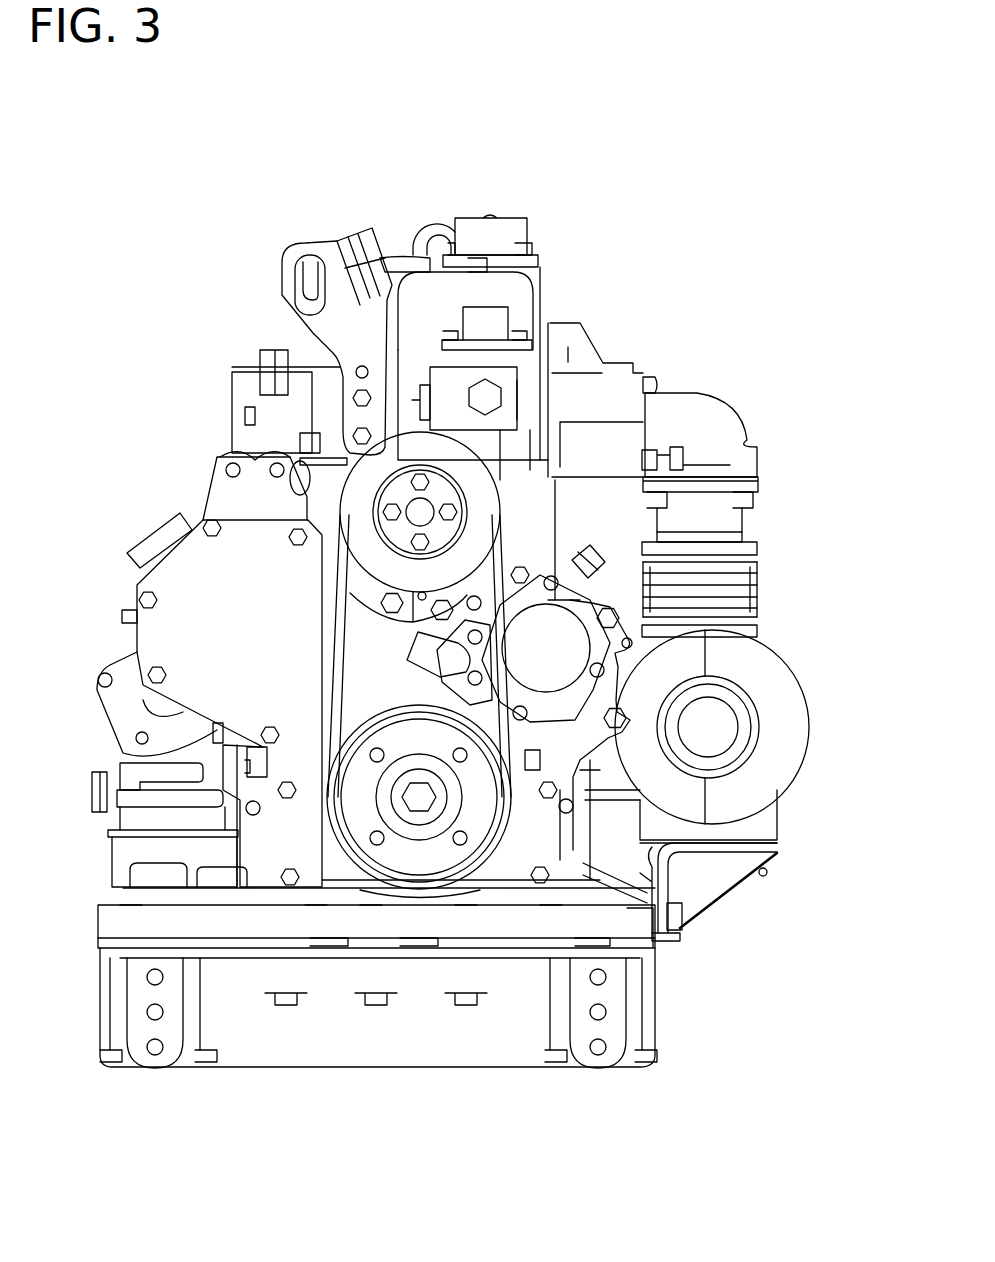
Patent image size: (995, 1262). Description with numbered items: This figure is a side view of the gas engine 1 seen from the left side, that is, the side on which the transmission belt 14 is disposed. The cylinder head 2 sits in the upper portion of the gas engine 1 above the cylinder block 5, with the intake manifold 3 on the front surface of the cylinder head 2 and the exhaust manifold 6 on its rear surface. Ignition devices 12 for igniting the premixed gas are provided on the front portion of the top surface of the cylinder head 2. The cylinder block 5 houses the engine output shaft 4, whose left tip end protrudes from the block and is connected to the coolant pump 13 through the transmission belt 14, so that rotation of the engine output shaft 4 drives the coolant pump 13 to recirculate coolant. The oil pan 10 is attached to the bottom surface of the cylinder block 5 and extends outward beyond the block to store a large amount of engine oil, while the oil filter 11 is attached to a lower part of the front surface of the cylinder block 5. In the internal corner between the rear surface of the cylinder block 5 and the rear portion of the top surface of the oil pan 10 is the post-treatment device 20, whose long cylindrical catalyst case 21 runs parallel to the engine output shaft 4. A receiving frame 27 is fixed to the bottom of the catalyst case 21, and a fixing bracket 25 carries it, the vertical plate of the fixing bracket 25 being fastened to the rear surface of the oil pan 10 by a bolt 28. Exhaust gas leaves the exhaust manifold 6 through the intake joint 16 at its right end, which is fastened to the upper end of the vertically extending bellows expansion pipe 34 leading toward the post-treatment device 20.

The gas engine 1 is at (216, 272).
The cylinder head 2 is at (312, 417).
The intake manifold 3 is at (277, 432).
The engine output shaft 4 is at (423, 797).
The cylinder block 5 is at (305, 745).
The exhaust manifold 6 is at (617, 387).
The oil pan 10 is at (638, 1007).
The oil filter 11 is at (117, 860).
The ignition device 12 is at (358, 250).
The coolant pump 13 is at (500, 357).
The transmission belt 14 is at (340, 692).
The intake joint 16 is at (707, 420).
The post-treatment device 20 is at (755, 782).
The catalyst case 21 is at (767, 685).
The fixing bracket 25 is at (718, 853).
The receiving frame 27 is at (757, 827).
The bolt 28 is at (673, 932).
The bellows expansion pipe 34 is at (717, 587).